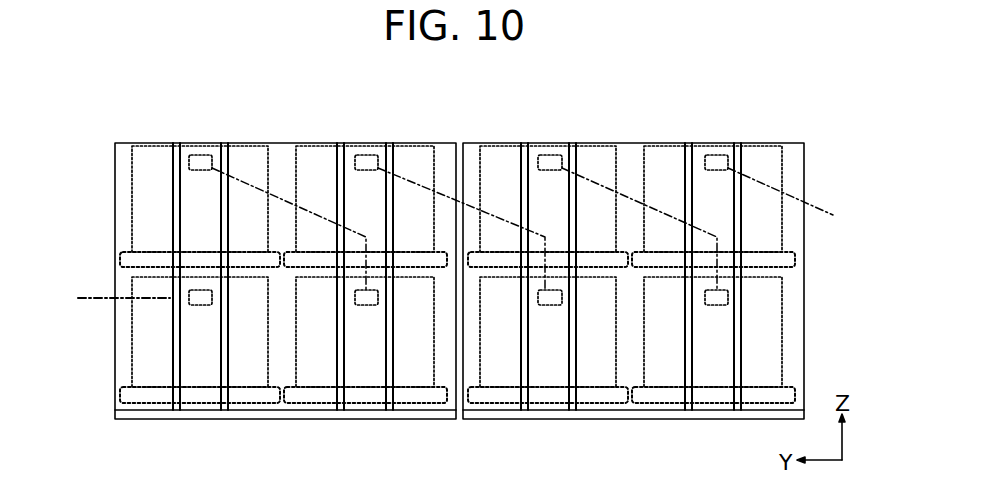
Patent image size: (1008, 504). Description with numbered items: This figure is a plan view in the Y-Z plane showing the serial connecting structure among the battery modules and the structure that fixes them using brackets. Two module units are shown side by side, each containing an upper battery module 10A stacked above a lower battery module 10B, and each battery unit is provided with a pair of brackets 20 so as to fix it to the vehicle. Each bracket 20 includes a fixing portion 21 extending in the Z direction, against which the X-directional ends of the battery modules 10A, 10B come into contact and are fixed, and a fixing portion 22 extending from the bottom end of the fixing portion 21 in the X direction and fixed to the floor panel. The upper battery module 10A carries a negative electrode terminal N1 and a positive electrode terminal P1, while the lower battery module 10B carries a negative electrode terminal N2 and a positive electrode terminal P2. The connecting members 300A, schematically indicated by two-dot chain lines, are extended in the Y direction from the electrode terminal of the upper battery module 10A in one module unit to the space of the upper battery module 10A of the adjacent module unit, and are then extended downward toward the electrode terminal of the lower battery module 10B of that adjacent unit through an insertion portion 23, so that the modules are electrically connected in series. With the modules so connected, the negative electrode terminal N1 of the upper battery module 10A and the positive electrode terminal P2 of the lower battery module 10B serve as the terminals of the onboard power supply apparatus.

The bracket 20 is at (115, 168).
The fixing portion 21 is at (122, 190).
The fixing portion 22 is at (278, 413).
The insertion portion 23 is at (200, 378).
The upper battery module 10A is at (131, 231).
The lower battery module 10B is at (131, 342).
The connecting member 300A is at (285, 196).
The negative electrode terminal N1 is at (200, 154).
The positive electrode terminal P1 is at (366, 154).
The negative electrode terminal N2 is at (200, 306).
The positive electrode terminal P2 is at (366, 306).